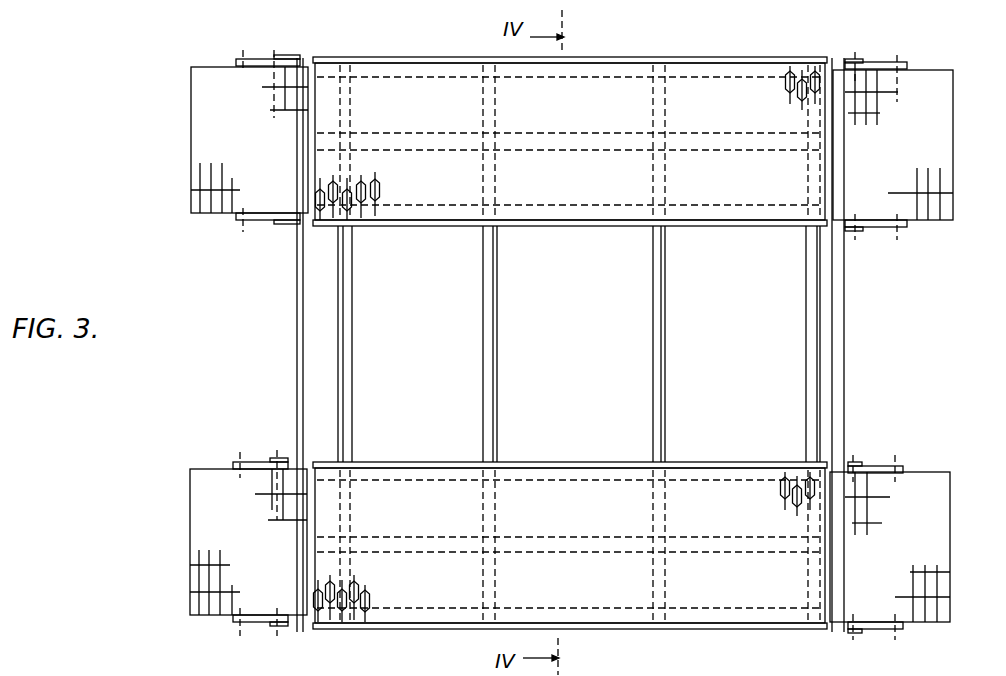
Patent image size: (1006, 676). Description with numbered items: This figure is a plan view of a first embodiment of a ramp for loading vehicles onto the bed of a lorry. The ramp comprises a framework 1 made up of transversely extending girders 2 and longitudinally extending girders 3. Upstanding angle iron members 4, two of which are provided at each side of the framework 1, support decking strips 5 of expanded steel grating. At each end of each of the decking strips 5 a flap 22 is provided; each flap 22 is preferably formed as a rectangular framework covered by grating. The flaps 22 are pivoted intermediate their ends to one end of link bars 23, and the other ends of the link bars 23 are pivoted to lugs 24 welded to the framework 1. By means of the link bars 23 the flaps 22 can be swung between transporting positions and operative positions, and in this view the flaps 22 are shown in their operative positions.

The framework 1 is at (878, 356).
The transversely extending girders 2 is at (350, 312).
The longitudinally extending girders 3 is at (590, 135).
The upstanding angle iron members 4 is at (700, 64).
The decking strips 5 is at (420, 205).
The flap 22 is at (943, 149).
The link bars 23 is at (250, 56).
The lugs 24 is at (280, 55).